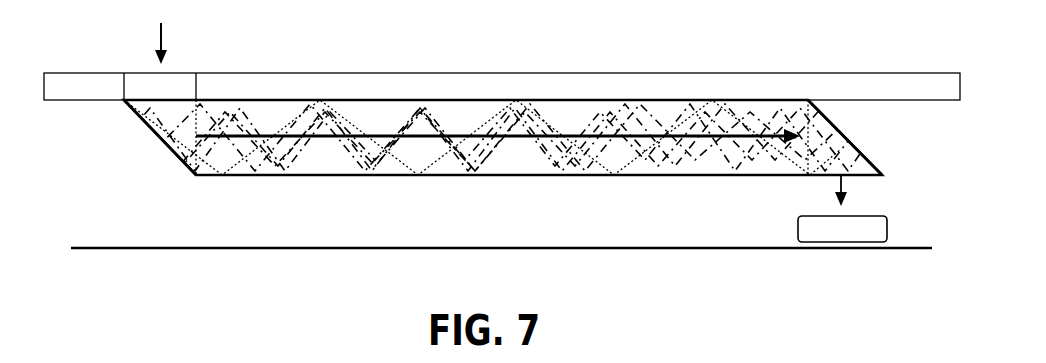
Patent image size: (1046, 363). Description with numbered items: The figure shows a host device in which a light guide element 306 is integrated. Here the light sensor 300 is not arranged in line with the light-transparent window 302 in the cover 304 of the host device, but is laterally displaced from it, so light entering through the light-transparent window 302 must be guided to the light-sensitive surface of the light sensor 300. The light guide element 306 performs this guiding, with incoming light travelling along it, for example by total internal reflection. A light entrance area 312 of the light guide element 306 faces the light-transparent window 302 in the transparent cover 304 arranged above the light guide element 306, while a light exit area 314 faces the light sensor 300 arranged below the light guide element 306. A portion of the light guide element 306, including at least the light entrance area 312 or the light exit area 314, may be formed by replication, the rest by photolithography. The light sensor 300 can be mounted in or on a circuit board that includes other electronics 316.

The light sensor 300 is at (873, 235).
The light-transparent window 302 is at (169, 82).
The cover 304 is at (310, 87).
The light guide element 306 is at (600, 191).
The light entrance area 312 is at (136, 99).
The light exit area 314 is at (868, 176).
The circuit board with other electronics 316 is at (312, 250).